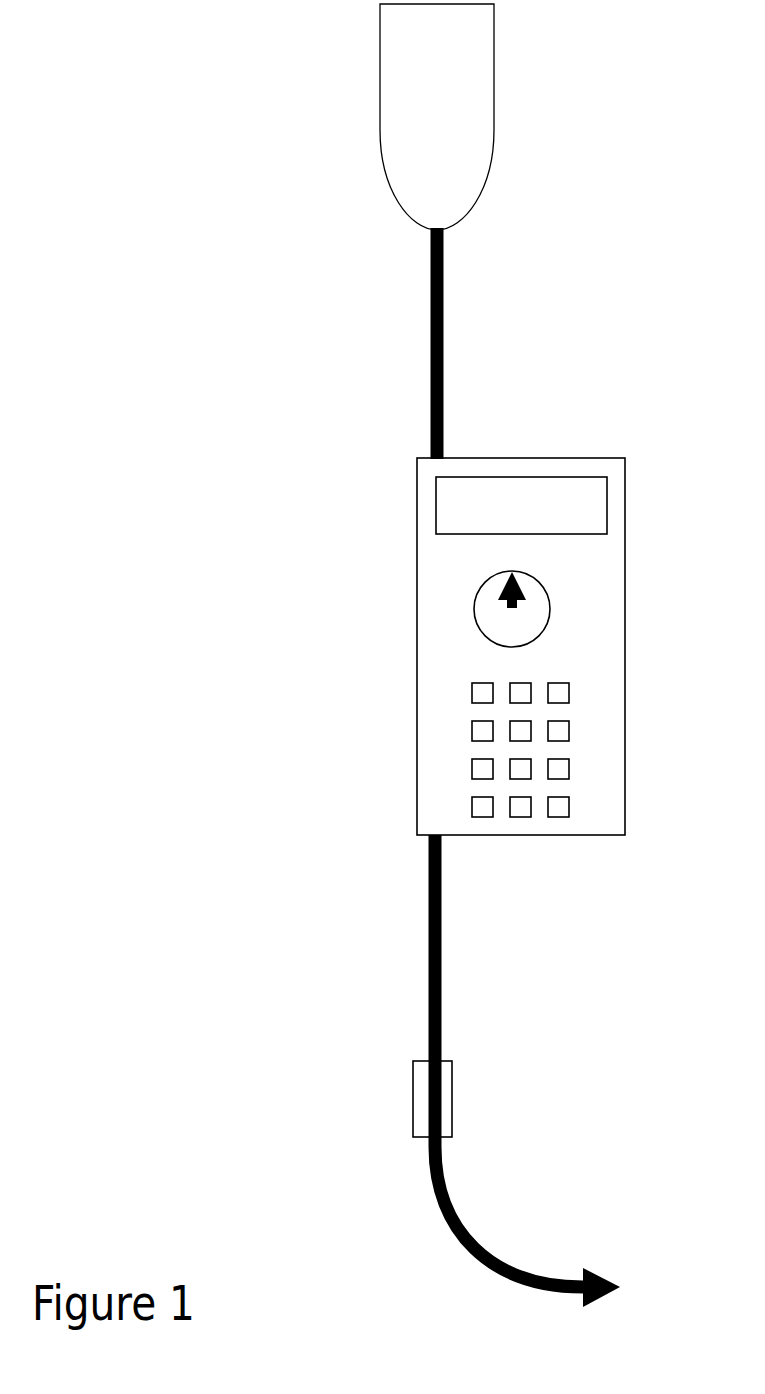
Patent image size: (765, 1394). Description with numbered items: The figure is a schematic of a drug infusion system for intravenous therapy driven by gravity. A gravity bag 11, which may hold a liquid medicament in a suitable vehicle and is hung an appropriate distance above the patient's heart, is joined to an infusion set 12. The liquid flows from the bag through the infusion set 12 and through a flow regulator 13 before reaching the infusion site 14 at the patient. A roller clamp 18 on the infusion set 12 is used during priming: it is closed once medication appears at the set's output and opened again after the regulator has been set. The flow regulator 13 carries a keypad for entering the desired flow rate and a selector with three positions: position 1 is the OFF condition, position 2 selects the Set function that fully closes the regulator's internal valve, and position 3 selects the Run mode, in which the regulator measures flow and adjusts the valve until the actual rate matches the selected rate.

The gravity bag 11 is at (495, 95).
The infusion set 12 is at (443, 335).
The flow regulator 13 is at (433, 646).
The infusion site 14 is at (553, 1071).
The roller clamp 18 is at (453, 1096).
The OFF position 1 is at (571, 574).
The Set position 2 is at (512, 596).
The Run position 3 is at (457, 574).